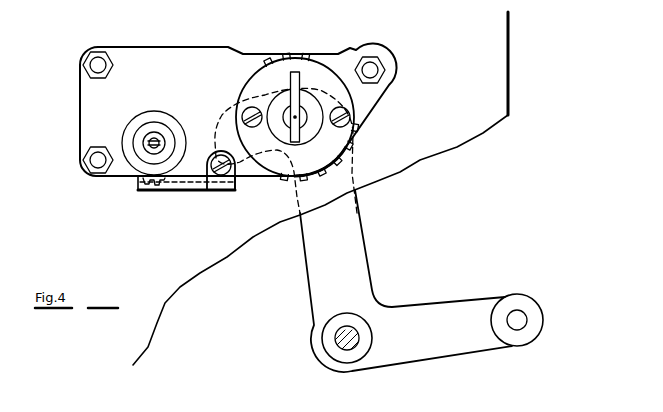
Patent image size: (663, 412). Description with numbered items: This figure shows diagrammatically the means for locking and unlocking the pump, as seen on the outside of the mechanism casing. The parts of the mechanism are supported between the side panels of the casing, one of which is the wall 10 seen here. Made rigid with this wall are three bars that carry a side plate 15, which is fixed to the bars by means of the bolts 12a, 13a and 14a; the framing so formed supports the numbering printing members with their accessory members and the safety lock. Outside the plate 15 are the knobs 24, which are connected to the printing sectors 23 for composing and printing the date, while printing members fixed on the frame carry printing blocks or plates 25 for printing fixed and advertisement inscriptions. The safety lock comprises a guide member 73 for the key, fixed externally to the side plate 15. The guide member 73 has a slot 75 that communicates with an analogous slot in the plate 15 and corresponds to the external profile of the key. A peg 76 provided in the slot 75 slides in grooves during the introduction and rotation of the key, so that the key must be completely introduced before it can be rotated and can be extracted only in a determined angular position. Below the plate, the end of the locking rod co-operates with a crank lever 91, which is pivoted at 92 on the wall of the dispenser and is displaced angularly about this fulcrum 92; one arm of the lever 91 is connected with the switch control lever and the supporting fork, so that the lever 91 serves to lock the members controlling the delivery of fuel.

The side panel 10 is at (427, 147).
The bolt 12a is at (86, 53).
The bolt 13a is at (91, 180).
The bolt 14a is at (382, 61).
The side plate 15 is at (86, 120).
The printing sectors 23 is at (160, 190).
The knobs 24 is at (150, 152).
The printing blocks or plates 25 is at (203, 186).
The guide member 73 is at (277, 70).
The slot 75 is at (306, 117).
The peg 76 is at (287, 118).
The crank lever 91 is at (306, 270).
The pivot 92 is at (334, 346).